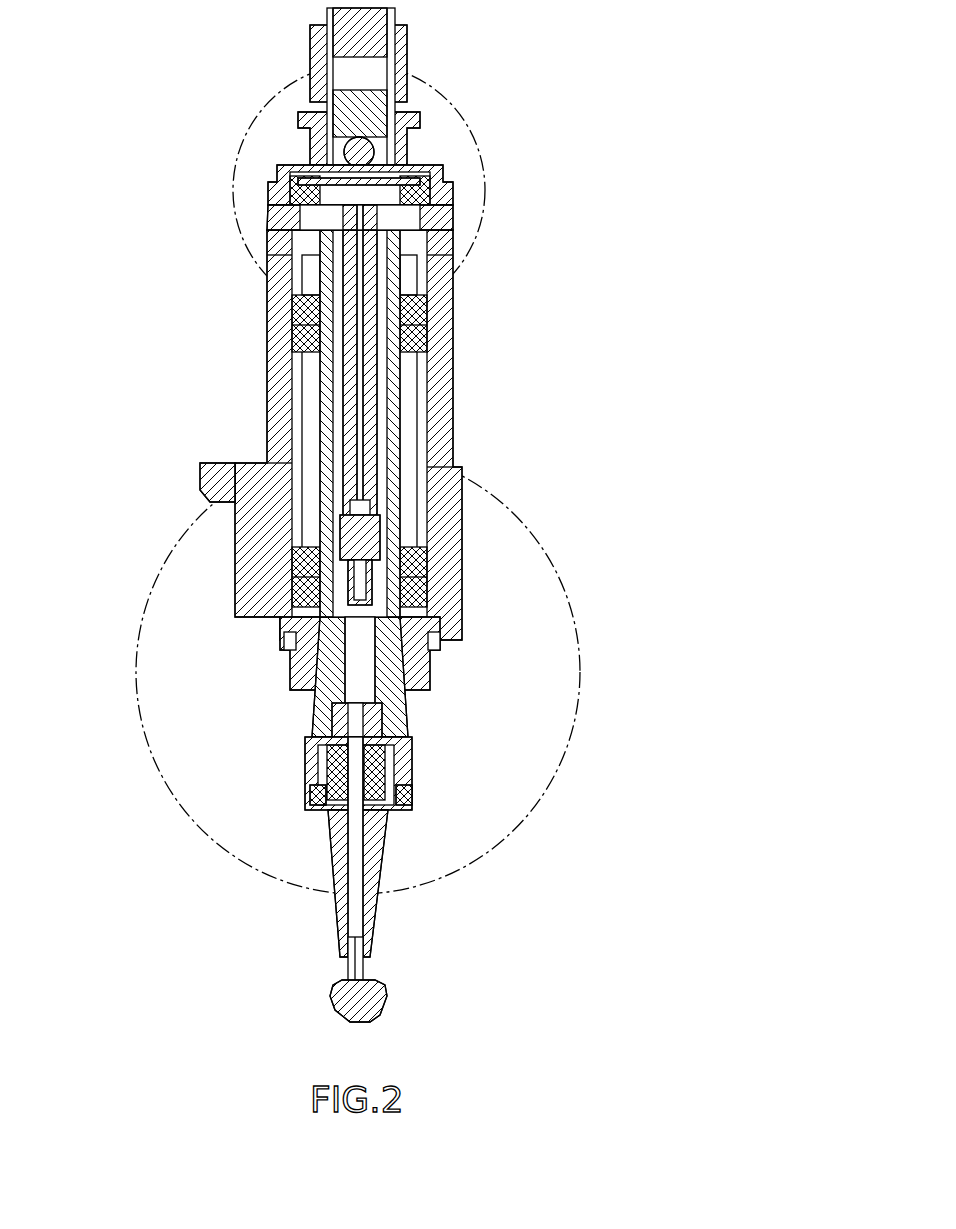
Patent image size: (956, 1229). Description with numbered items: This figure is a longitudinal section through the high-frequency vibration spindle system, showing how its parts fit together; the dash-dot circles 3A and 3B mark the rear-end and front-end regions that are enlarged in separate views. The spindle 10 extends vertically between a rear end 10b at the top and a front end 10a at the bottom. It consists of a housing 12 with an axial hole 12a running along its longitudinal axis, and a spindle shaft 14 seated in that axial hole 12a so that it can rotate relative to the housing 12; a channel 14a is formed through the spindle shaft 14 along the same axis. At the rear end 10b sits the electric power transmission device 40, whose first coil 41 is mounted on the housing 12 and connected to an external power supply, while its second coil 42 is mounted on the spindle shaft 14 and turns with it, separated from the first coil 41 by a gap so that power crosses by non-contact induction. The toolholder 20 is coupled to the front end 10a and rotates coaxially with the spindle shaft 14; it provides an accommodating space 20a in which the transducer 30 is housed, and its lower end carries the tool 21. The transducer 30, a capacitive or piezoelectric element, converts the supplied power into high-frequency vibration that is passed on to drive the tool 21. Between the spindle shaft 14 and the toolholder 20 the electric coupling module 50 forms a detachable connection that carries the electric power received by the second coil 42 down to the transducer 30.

The enlarged view region of FIG. 3A is at (472, 151).
The enlarged view region of FIG. 3B is at (530, 514).
The spindle 10 is at (369, 372).
The front end 10a is at (460, 610).
The rear end 10b is at (453, 230).
The housing 12 is at (286, 435).
The axial hole 12a is at (265, 272).
The spindle shaft 14 is at (351, 372).
The channel 14a is at (363, 393).
The toolholder 20 is at (420, 760).
The accommodating space 20a is at (387, 723).
The tool 21 is at (382, 990).
The transducer 30 is at (326, 793).
The electric power transmission device 40 is at (261, 190).
The first coil 41 is at (268, 171).
The second coil 42 is at (290, 212).
The electric coupling module 50 is at (330, 538).